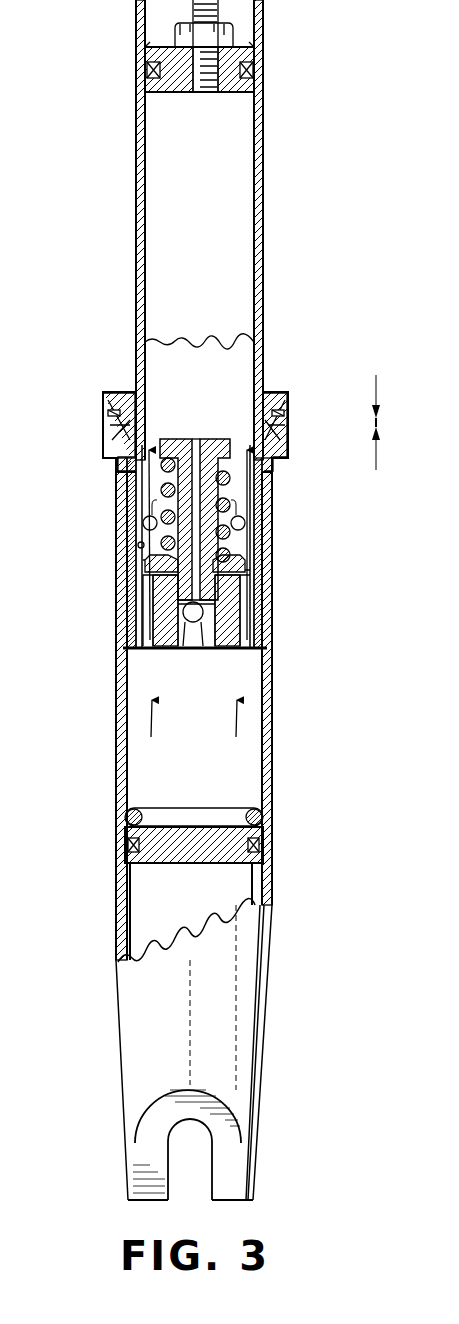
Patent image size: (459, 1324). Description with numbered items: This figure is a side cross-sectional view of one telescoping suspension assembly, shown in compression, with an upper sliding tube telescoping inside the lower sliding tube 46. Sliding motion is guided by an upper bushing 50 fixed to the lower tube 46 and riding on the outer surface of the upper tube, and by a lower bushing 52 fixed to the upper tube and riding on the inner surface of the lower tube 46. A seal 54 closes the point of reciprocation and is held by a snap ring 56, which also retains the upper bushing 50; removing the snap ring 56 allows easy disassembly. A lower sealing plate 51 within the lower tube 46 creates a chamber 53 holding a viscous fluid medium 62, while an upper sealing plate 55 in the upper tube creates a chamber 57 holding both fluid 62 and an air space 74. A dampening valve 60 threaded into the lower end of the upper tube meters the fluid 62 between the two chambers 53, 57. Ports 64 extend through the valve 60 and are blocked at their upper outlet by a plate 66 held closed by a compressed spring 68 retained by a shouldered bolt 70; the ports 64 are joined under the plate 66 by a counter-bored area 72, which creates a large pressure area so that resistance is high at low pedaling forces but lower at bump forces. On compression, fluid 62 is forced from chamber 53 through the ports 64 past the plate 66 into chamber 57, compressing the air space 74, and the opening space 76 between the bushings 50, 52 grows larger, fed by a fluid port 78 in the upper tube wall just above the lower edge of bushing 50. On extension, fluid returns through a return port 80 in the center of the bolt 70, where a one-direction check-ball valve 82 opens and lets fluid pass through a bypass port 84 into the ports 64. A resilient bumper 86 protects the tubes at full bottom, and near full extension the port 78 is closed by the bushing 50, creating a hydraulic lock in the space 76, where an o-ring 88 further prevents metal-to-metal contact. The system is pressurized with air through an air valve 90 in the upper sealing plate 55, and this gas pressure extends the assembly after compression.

The lower sliding tube 46 is at (275, 715).
The upper bushing 50 is at (280, 470).
The lower sealing plate 51 is at (250, 868).
The lower bushing 52 is at (130, 600).
The chamber 53 is at (208, 803).
The seal 54 is at (110, 418).
The upper sealing plate 55 is at (250, 62).
The snap ring 56 is at (282, 418).
The chamber 57 is at (212, 268).
The dampening valve 60 is at (248, 605).
The viscous fluid medium 62 is at (216, 378).
The ports 64 is at (140, 640).
The plate 66 is at (246, 562).
The compressed spring 68 is at (162, 493).
The shouldered bolt 70 is at (188, 445).
The counter-bored area 72 is at (240, 572).
The air space 74 is at (212, 188).
The opening space 76 is at (255, 522).
The fluid port 78 is at (246, 525).
The return port 80 is at (205, 445).
The check-ball valve 82 is at (186, 650).
The bypass port 84 is at (210, 650).
The bumper 86 is at (148, 812).
The o-ring 88 is at (140, 546).
The air valve 90 is at (214, 37).